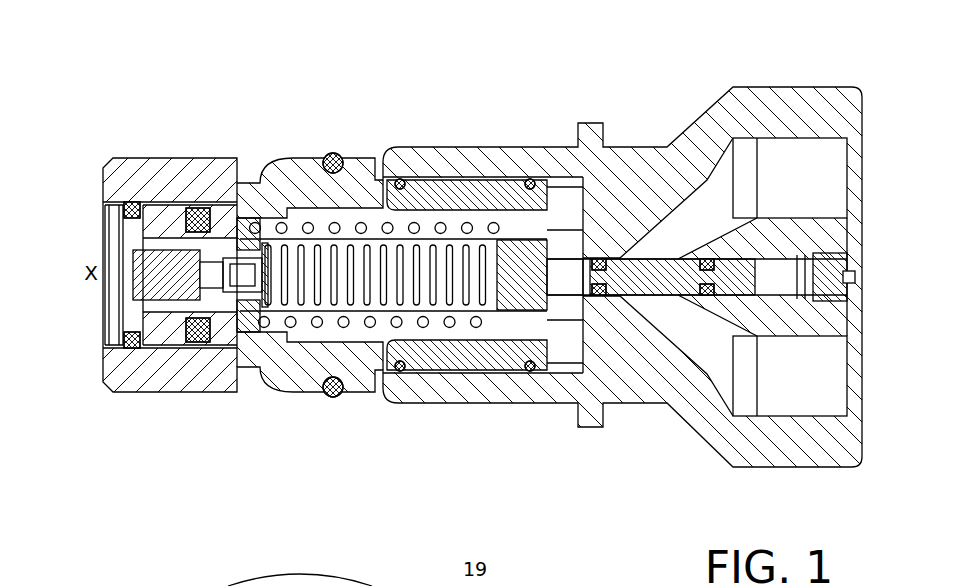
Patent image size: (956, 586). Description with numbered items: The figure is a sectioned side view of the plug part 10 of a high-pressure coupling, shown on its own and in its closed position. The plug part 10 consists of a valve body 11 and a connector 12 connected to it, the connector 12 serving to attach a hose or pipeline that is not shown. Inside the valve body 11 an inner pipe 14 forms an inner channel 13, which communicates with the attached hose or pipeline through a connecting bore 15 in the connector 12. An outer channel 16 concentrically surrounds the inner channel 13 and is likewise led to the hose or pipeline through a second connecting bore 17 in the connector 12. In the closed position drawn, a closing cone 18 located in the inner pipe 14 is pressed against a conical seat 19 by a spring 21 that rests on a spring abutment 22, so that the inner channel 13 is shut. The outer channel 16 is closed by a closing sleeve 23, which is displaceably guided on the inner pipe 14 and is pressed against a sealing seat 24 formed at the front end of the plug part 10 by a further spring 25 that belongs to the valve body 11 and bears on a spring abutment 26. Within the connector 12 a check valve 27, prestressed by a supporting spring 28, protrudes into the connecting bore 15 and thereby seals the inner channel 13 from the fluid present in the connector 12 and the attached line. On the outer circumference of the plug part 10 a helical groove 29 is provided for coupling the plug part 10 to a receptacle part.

The plug part 10 is at (548, 95).
The valve body 11 is at (143, 170).
The connector 12 is at (727, 102).
The inner channel 13 is at (247, 236).
The inner pipe 14 is at (345, 238).
The connecting bore 15 is at (697, 227).
The outer channel 16 is at (335, 335).
The connecting bore 17 is at (657, 348).
The closing cone 18 is at (208, 215).
The conical seat 19 is at (183, 257).
The spring 21 is at (407, 270).
The spring abutment 22 is at (533, 243).
The closing sleeve 23 is at (227, 335).
The sealing seat 24 is at (190, 330).
The spring 25 is at (400, 328).
The spring abutment 26 is at (480, 326).
The check valve 27 is at (648, 347).
The supporting spring 28 is at (767, 262).
The helical groove 29 is at (275, 365).